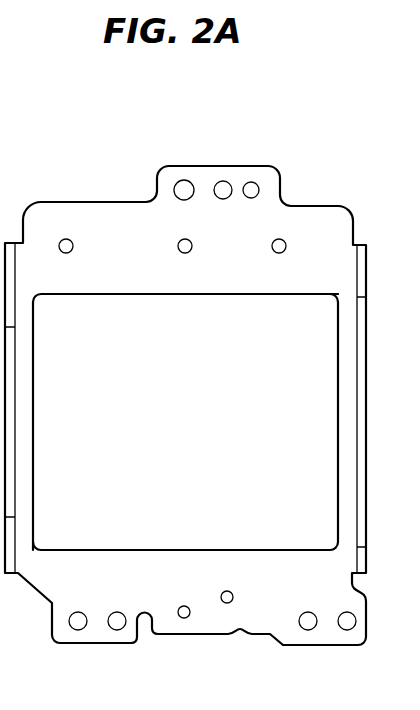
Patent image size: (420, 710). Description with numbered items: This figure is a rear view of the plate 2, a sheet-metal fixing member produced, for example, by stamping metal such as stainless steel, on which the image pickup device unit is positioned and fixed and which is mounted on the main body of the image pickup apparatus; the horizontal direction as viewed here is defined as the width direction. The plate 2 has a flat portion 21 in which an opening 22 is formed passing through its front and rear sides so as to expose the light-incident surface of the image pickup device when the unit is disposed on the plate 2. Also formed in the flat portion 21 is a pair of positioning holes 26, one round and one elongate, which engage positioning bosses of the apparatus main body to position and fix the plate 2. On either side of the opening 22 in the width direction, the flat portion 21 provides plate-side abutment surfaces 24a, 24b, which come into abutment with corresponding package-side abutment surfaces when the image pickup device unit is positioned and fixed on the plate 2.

The plate 2 is at (352, 186).
The flat portion 21 is at (132, 275).
The opening 22 is at (339, 353).
The plate-side abutment surface 24a is at (26, 418).
The plate-side abutment surface 24b is at (347, 425).
The positioning holes 26 is at (222, 181).